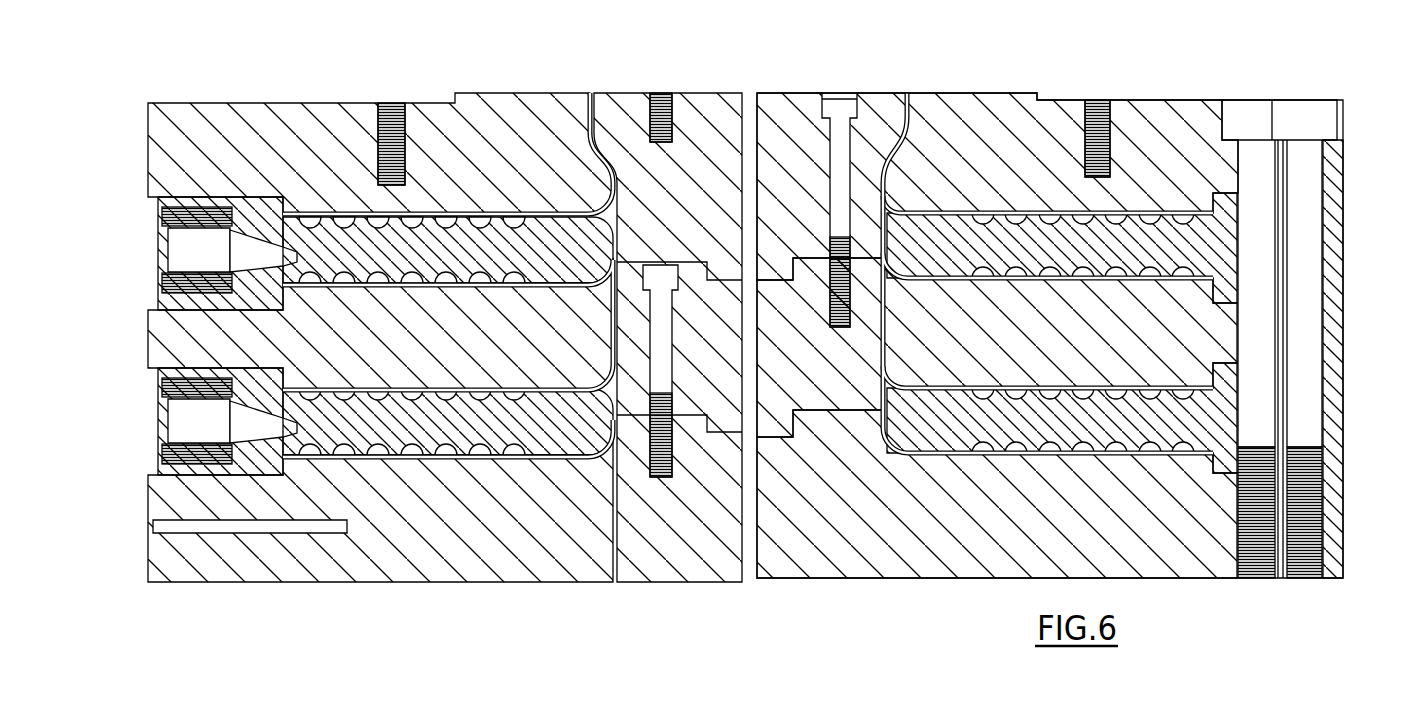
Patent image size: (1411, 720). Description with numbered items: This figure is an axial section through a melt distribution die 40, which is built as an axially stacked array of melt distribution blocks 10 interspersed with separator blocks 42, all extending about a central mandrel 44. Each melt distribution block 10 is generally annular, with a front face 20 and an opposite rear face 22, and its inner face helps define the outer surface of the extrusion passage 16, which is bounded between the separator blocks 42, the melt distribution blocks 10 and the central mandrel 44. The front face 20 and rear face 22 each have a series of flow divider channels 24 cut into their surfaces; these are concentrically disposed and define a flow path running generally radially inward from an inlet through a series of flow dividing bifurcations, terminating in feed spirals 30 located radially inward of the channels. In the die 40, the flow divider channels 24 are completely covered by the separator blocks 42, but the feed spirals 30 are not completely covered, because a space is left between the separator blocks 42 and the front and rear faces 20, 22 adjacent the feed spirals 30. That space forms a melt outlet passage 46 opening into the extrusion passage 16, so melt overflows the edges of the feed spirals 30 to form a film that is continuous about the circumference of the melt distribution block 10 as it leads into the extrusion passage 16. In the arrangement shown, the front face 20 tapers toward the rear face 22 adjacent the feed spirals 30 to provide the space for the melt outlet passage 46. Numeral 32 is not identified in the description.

The melt distribution block 10 is at (1333, 250).
The extrusion passage 16 is at (618, 250).
The front face 20 is at (941, 212).
The rear face 22 is at (933, 281).
The flow divider channels 24 is at (344, 222).
The feed spirals 30 is at (512, 390).
The nozzle housing 32 is at (166, 246).
The melt distribution die 40 is at (300, 598).
The separator blocks 42 is at (977, 155).
The central mandrel 44 is at (782, 107).
The melt outlet passage 46 is at (530, 213).